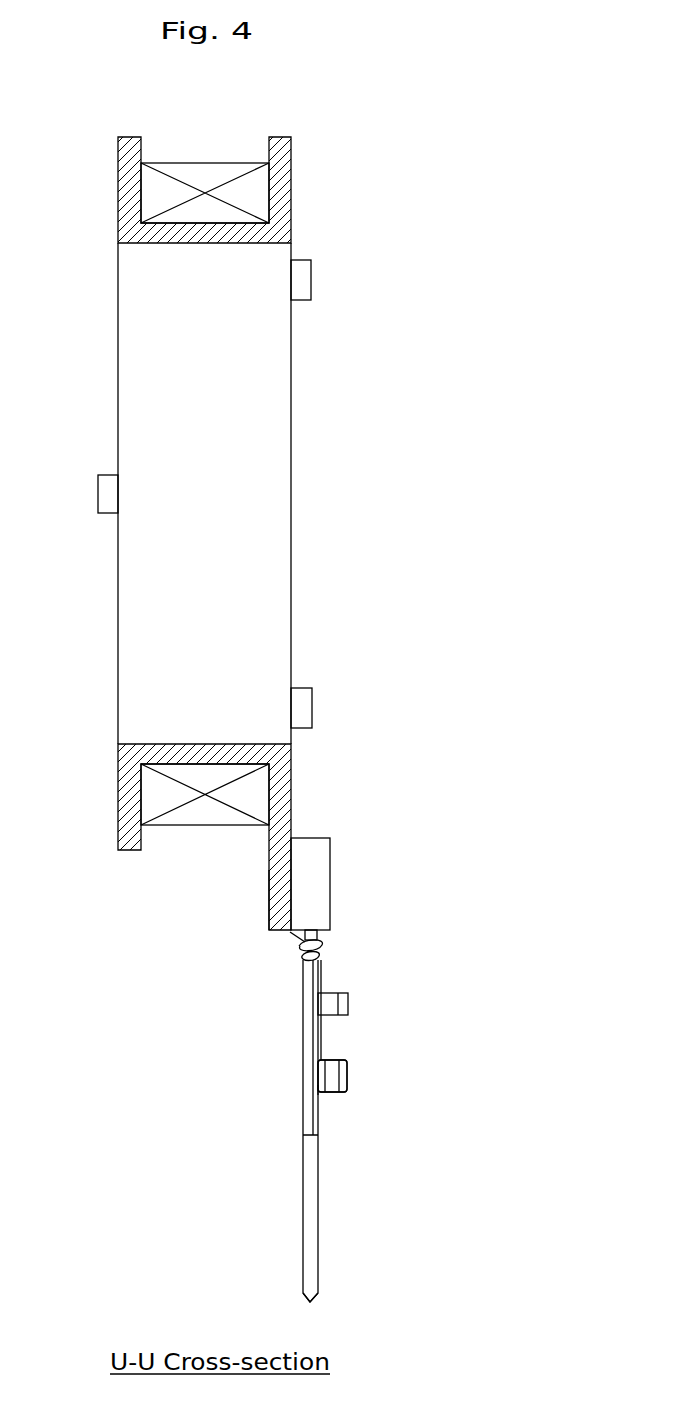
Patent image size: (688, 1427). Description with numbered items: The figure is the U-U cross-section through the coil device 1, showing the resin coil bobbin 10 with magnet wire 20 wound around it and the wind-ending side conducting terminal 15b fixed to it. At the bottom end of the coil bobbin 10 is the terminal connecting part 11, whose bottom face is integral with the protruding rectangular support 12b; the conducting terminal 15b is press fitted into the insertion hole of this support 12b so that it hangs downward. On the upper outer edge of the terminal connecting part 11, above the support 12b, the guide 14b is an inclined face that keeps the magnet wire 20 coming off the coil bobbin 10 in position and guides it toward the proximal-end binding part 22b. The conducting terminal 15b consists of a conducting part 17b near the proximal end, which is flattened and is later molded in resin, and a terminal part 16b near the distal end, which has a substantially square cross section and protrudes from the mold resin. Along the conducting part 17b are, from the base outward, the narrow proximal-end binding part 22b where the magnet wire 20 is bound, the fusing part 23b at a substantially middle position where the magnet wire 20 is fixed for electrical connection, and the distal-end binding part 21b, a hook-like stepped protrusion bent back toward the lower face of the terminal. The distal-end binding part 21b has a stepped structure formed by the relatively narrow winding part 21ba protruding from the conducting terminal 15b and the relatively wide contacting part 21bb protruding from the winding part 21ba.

The coil device 1 is at (396, 142).
The coil bobbin 10 is at (118, 196).
The terminal connecting part 11 is at (291, 832).
The support 12b is at (330, 882).
The guide 14b is at (267, 920).
The wind-ending side conducting terminal 15b is at (310, 1297).
The terminal part 16b is at (303, 1190).
The conducting part 17b is at (303, 1033).
The magnet wire 20 is at (267, 875).
The distal-end binding part 21b is at (332, 1076).
The winding part 21ba is at (318, 1093).
The contacting part 21bb is at (348, 1073).
The proximal-end binding part 22b is at (302, 942).
The fusing part 23b is at (348, 1003).